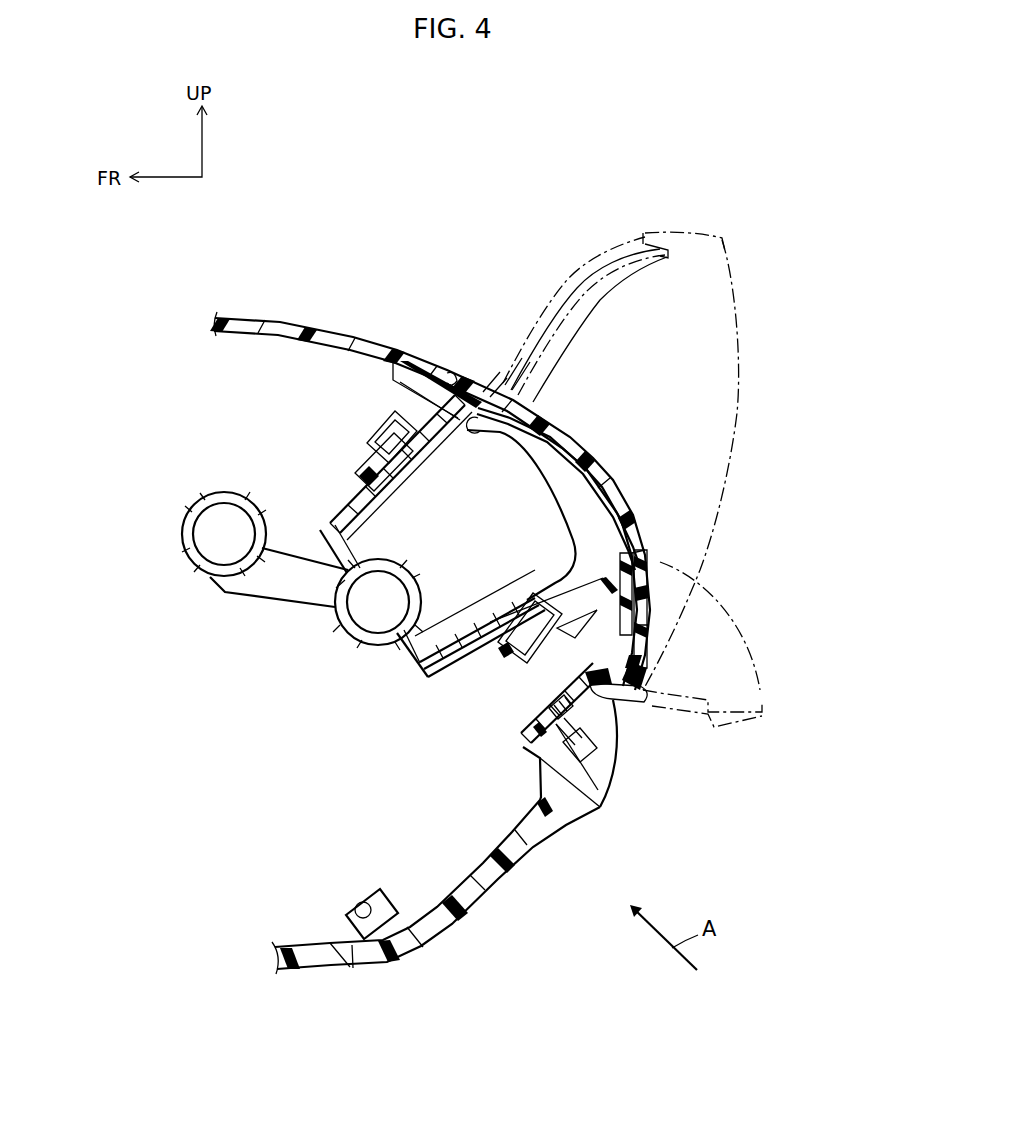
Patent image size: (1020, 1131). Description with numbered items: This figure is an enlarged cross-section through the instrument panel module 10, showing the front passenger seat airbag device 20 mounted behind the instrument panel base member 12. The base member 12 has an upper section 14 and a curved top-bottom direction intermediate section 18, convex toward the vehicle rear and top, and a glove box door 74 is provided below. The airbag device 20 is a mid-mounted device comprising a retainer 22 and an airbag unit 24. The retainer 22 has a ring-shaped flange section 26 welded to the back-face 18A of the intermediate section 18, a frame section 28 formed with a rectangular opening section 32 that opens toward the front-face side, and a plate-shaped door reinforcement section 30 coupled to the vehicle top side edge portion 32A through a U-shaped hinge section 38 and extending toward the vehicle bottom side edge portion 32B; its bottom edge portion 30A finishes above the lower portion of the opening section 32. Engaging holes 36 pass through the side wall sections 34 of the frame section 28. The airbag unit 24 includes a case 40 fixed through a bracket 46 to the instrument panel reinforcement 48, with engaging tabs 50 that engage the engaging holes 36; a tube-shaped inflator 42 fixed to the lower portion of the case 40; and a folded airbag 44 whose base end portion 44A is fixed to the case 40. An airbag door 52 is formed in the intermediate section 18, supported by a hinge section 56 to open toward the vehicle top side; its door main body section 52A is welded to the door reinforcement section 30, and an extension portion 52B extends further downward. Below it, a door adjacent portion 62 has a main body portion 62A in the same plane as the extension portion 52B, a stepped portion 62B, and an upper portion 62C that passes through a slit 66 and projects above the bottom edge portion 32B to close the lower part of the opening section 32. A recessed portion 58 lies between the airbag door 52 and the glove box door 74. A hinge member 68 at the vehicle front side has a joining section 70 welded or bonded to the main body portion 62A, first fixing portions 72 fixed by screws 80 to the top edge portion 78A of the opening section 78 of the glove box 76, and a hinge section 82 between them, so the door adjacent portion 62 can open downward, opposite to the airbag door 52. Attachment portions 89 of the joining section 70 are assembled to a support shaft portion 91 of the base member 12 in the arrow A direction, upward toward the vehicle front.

The instrument panel module 10 is at (430, 195).
The instrument panel base member 12 is at (258, 316).
The upper section 14 is at (350, 332).
The top-bottom direction intermediate section 18 is at (628, 452).
The back-face 18A is at (452, 378).
The front passenger seat airbag device 20 is at (230, 430).
The retainer 22 is at (350, 452).
The airbag unit 24 is at (330, 520).
The flange section 26 is at (398, 372).
The frame section 28 is at (405, 398).
The door reinforcement section 30 is at (636, 246).
The bottom edge portion 30A is at (728, 487).
The opening section 32 is at (626, 495).
The vehicle top side edge portion 32A is at (484, 390).
The vehicle bottom side edge portion 32B is at (612, 580).
The side wall sections 34 is at (420, 482).
The engaging holes 36 is at (448, 450).
The hinge section 38 is at (484, 432).
The case 40 is at (455, 672).
The inflator 42 is at (355, 640).
The airbag 44 is at (545, 488).
The base end portion 44A is at (405, 660).
The bracket 46 is at (282, 605).
The instrument panel reinforcement 48 is at (192, 562).
The engaging tabs 50 is at (376, 428).
The airbag door 52 is at (600, 250).
The door main body section 52A is at (658, 473).
The extension portion 52B is at (646, 582).
The hinge section 56 is at (508, 382).
The recessed portion 58 is at (650, 700).
The door adjacent portion 62 is at (652, 627).
The main body portion 62A is at (644, 660).
The stepped portion 62B is at (650, 611).
The upper portion 62C is at (648, 575).
The slit 66 is at (654, 598).
The hinge member 68 is at (648, 676).
The joining section 70 is at (652, 642).
The first fixing portions 72 is at (578, 780).
The glove box door 74 is at (482, 905).
The glove box 76 is at (296, 948).
The opening section 78 is at (492, 880).
The top edge portion 78A is at (520, 735).
The screws 80 is at (612, 748).
The hinge section 82 is at (610, 703).
The attachment portions 89 is at (393, 905).
The support shaft portion 91 is at (360, 902).